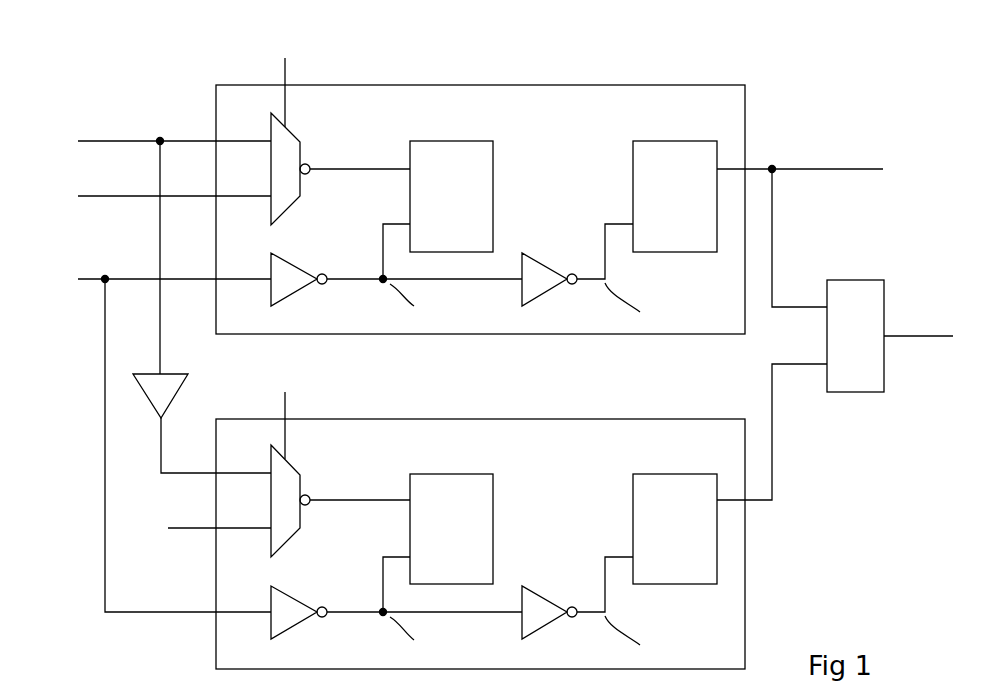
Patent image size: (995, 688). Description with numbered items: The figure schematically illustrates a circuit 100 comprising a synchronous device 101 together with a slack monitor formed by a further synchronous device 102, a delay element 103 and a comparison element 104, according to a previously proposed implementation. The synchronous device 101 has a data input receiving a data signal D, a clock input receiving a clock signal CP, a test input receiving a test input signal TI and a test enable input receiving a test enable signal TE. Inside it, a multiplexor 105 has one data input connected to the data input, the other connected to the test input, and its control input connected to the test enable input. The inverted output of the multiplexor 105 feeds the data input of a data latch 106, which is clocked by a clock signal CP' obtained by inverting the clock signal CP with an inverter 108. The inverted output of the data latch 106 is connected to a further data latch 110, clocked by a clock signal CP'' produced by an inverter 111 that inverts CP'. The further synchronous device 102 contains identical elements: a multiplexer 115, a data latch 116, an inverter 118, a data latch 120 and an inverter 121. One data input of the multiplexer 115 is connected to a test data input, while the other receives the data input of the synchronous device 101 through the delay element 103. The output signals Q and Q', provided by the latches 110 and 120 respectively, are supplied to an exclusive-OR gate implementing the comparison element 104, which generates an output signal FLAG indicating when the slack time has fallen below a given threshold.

The circuit 100 is at (828, 68).
The synchronous device 101 is at (642, 98).
The further synchronous device 102 is at (642, 432).
The delay element 103 is at (170, 393).
The comparison element 104 is at (862, 285).
The multiplexor 105 is at (292, 155).
The data latch 106 is at (460, 150).
The inverter 108 is at (290, 272).
The further data latch 110 is at (685, 150).
The inverter 111 is at (535, 272).
The multiplexer 115 is at (292, 487).
The data latch 116 is at (460, 485).
The inverter 118 is at (290, 607).
The data latch 120 is at (685, 485).
The inverter 121 is at (535, 607).